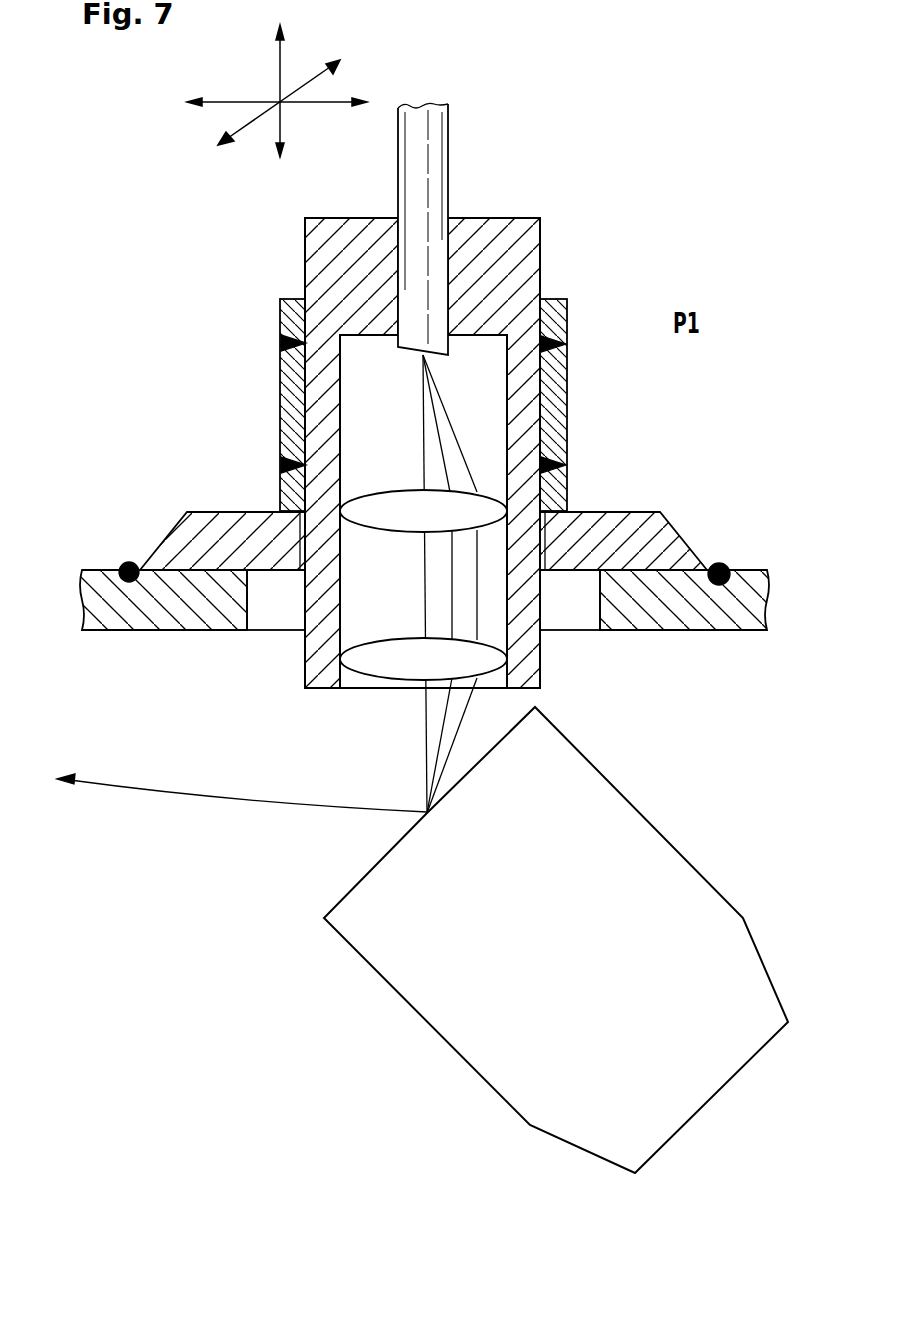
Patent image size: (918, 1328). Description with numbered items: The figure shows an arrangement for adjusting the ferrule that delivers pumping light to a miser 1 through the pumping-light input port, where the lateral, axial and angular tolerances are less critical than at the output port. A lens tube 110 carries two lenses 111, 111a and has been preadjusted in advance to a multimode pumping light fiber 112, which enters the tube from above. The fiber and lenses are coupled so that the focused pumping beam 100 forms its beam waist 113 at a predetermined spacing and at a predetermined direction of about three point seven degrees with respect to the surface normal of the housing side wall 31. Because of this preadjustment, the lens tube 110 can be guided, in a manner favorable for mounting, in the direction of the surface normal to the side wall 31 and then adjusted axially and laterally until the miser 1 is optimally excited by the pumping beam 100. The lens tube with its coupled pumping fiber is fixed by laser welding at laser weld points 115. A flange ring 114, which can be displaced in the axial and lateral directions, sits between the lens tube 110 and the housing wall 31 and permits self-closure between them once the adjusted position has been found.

The miser 1 is at (478, 1037).
The housing side wall 31 is at (715, 620).
The pumping beam 100 is at (448, 747).
The lens tube 110 is at (527, 250).
The lens 111 is at (392, 512).
The lens 111a is at (392, 660).
The multimode pumping light fiber 112 is at (436, 158).
The beam waist 113 is at (427, 812).
The flange ring 114 is at (595, 528).
The laser weld points 115 is at (280, 345).